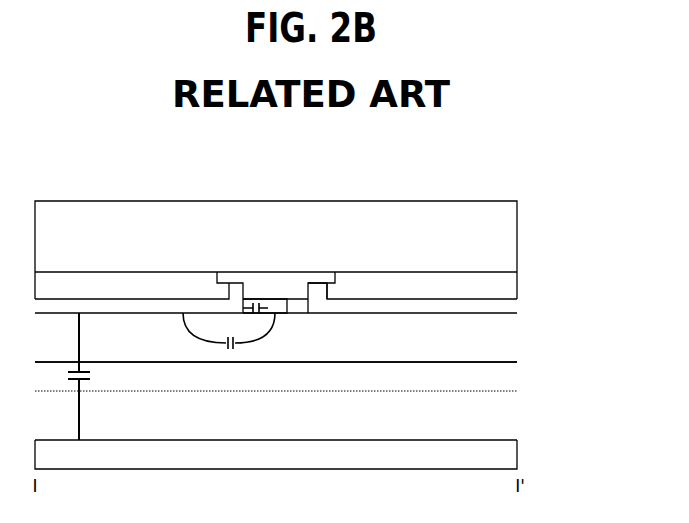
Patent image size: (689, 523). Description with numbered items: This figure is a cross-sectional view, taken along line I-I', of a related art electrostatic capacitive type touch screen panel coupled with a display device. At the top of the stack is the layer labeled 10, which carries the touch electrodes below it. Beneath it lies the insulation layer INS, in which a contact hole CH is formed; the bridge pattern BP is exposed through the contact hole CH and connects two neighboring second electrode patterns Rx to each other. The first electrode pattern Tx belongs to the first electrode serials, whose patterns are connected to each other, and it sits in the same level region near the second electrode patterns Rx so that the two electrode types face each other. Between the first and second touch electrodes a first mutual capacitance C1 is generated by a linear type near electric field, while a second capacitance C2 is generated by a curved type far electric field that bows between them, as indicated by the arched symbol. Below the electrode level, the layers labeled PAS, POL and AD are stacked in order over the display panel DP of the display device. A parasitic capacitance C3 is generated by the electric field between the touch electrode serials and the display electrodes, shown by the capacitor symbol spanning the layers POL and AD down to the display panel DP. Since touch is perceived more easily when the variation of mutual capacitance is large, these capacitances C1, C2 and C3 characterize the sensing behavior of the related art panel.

The substrate 10 is at (512, 238).
The insulation layer INS is at (510, 284).
The bridge pattern BP is at (235, 273).
The second electrode pattern Rx is at (510, 310).
The contact hole CH is at (325, 298).
The first electrode pattern Tx is at (272, 312).
The first mutual capacitance C1 is at (255, 319).
The second capacitance C2 is at (229, 337).
The parasitic capacitance C3 is at (89, 376).
The passivation layer PAS is at (510, 339).
The polarizer POL is at (512, 374).
The adhesive layer AD is at (512, 414).
The display panel DP is at (512, 456).